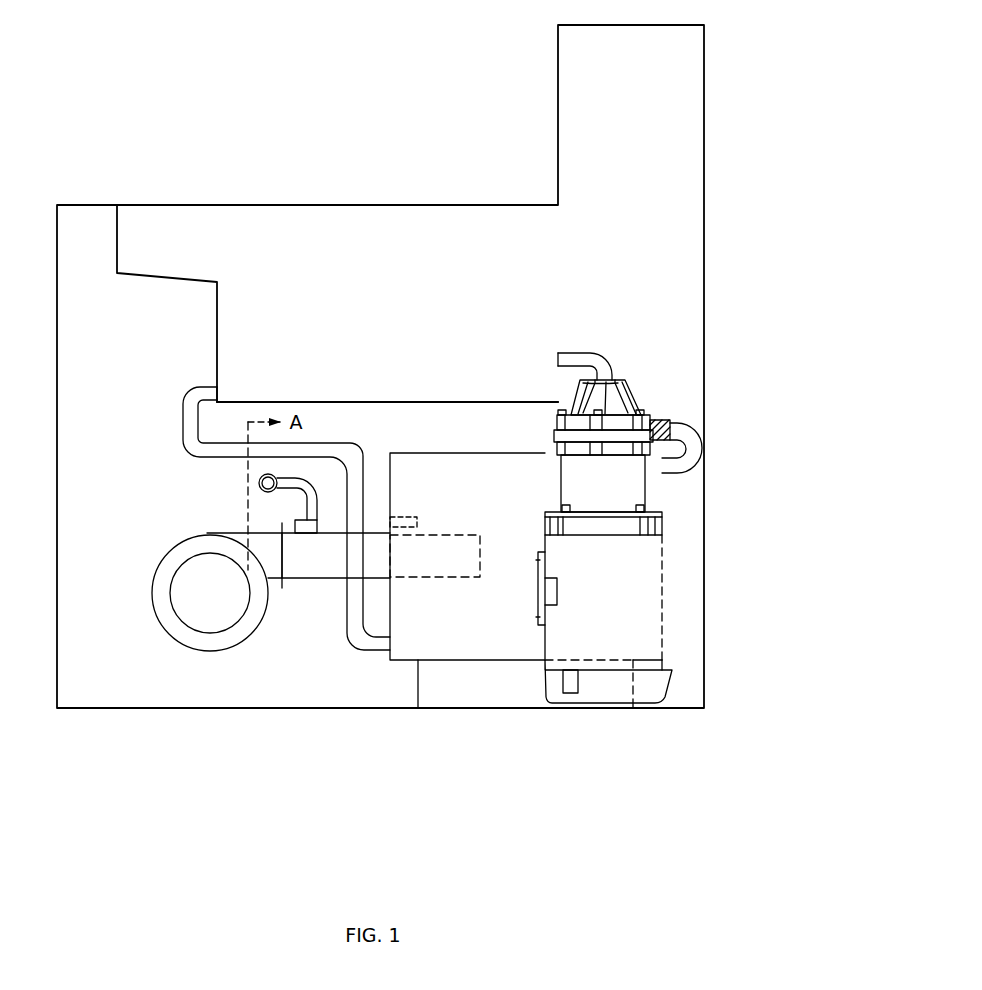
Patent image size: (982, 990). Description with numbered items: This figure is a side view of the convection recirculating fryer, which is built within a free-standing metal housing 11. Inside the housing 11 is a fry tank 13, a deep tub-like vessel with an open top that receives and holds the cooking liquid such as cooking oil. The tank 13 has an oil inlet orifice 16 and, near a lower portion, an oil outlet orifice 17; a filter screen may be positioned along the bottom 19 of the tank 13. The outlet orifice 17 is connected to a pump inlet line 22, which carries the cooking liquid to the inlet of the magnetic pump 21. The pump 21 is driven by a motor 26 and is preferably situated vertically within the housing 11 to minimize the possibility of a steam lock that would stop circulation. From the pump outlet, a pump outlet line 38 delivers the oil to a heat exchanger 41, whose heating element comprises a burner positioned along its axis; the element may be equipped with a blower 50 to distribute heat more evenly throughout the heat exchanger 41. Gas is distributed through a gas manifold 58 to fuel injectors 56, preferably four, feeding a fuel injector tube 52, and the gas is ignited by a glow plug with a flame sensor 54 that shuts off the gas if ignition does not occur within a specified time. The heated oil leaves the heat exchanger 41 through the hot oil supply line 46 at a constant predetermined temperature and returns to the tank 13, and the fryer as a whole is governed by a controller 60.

The housing 11 is at (710, 213).
The fry tank 13 is at (387, 304).
The oil inlet orifice 16 is at (219, 391).
The oil outlet orifice 17 is at (554, 352).
The bottom 19 is at (388, 400).
The magnetic pump 21 is at (627, 477).
The pump inlet line 22 is at (592, 350).
The motor 26 is at (629, 605).
The pump outlet line 38 is at (702, 427).
The heat exchanger 41 is at (467, 580).
The hot oil supply line 46 is at (181, 404).
The blower 50 is at (208, 595).
The fuel injector tube 52 is at (324, 574).
The flame sensor 54 is at (389, 512).
The fuel injectors 56 is at (287, 496).
The gas manifold 58 is at (257, 487).
The controller 60 is at (448, 566).